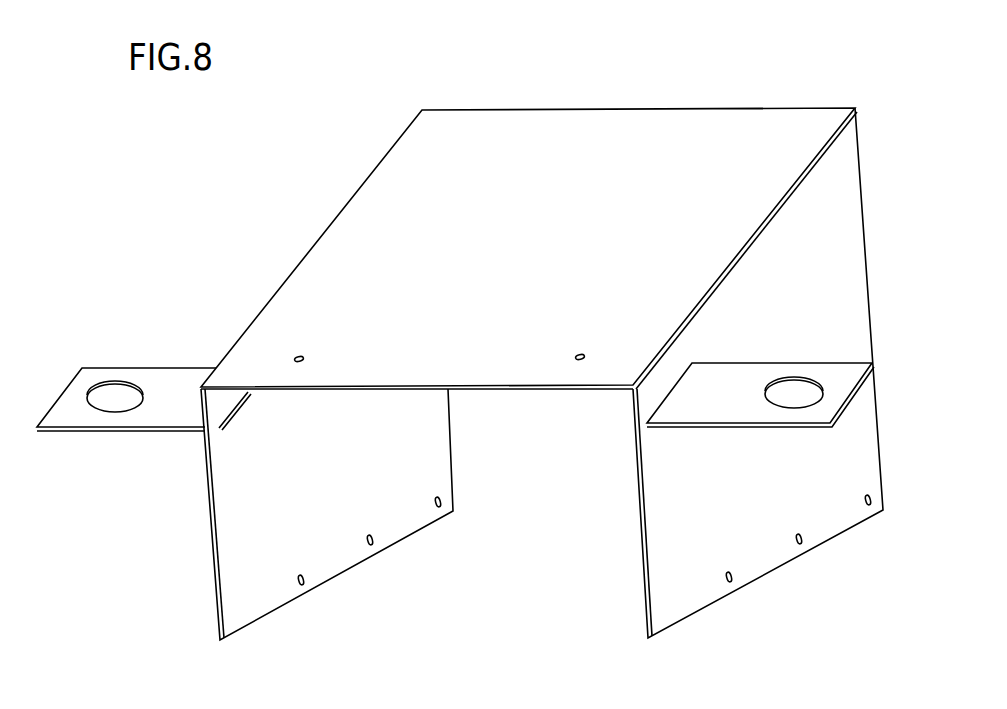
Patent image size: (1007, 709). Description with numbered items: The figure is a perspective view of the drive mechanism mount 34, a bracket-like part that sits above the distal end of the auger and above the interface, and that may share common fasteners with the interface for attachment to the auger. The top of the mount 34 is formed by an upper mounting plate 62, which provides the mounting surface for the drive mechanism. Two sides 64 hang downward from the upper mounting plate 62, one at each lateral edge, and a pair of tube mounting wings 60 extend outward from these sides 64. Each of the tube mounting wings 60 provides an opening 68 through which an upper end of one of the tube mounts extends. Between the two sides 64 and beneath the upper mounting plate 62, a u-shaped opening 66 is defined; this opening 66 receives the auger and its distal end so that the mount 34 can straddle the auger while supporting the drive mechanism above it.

The mount 34 is at (252, 242).
The upper mounting plate 62 is at (605, 128).
The sides 64 is at (258, 603).
The tube mounting wings 60 is at (101, 378).
The openings 68 is at (115, 397).
The u-shaped opening 66 is at (500, 512).